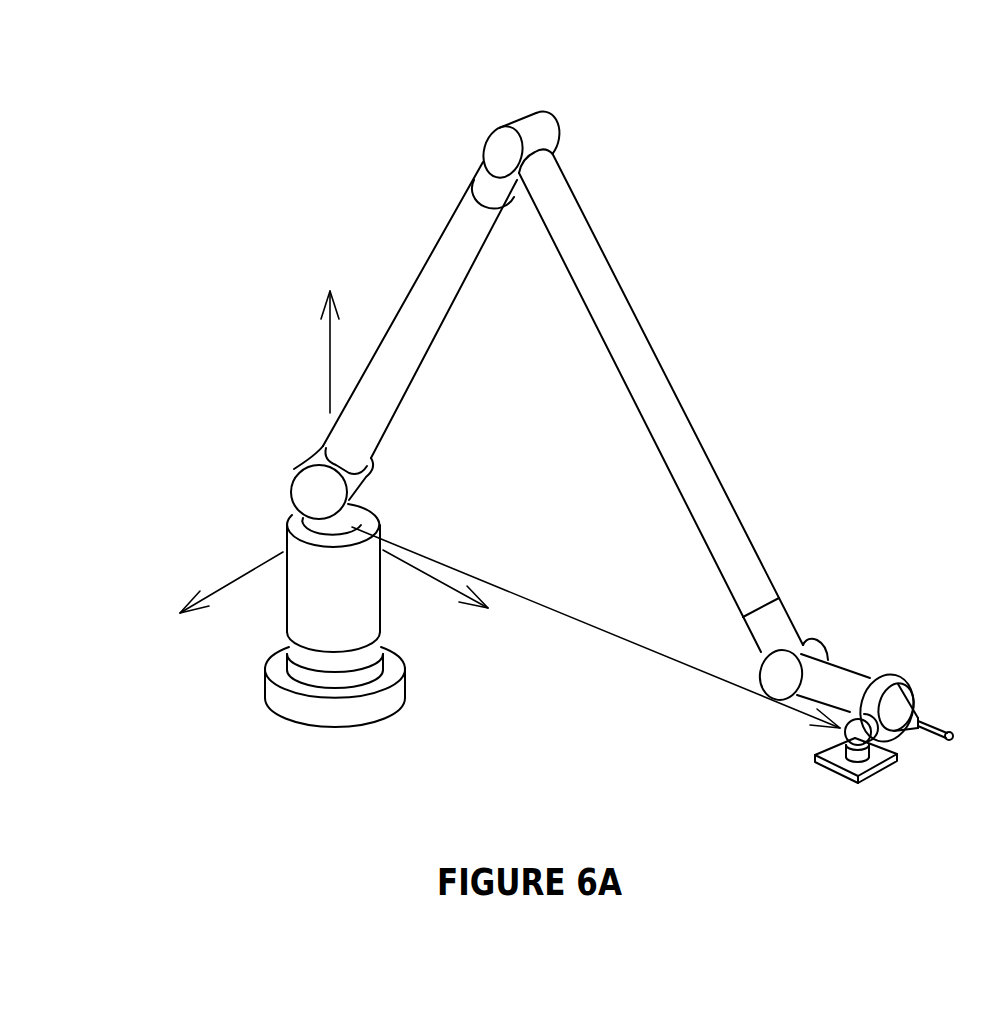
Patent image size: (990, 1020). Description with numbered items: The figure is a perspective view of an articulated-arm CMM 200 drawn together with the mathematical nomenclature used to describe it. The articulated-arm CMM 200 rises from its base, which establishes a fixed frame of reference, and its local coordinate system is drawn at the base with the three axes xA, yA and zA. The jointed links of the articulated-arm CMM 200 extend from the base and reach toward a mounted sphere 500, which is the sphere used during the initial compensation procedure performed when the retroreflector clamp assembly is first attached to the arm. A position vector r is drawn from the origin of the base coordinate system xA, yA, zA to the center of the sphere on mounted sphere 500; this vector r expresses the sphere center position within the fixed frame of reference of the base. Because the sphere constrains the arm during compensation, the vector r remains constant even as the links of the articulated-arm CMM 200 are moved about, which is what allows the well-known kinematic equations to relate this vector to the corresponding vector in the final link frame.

The articulated-arm CMM 200 is at (443, 142).
The mounted sphere 500 is at (818, 775).
The position vector r is at (596, 627).
The x axis of the articulated-arm CMM coordinate system xA is at (211, 592).
The y axis of the articulated-arm CMM coordinate system yA is at (456, 597).
The z axis of the articulated-arm CMM coordinate system zA is at (333, 326).